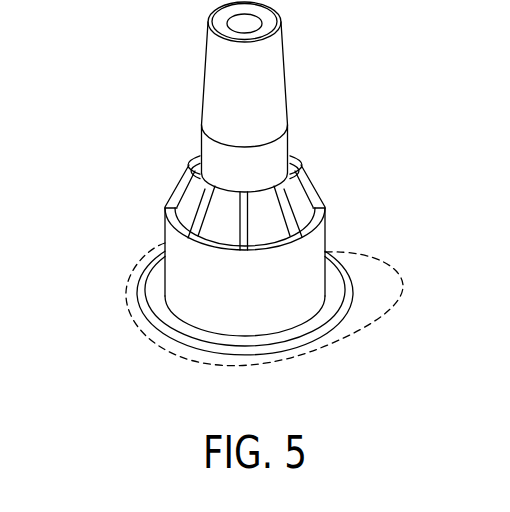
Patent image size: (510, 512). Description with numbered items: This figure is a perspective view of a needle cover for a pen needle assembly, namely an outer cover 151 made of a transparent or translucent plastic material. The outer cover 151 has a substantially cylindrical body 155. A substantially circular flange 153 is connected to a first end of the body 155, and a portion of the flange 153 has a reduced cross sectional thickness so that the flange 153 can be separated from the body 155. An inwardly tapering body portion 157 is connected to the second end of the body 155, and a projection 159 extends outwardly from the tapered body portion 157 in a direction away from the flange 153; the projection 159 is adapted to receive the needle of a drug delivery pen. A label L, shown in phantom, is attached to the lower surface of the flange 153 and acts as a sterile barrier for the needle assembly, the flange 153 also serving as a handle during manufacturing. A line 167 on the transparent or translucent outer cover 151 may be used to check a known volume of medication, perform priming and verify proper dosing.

The outer cover 151 is at (86, 162).
The flange 153 is at (143, 303).
The body 155 is at (310, 246).
The inwardly tapering body portion 157 is at (292, 195).
The projection 159 is at (279, 67).
The line 167 is at (284, 129).
The label L is at (393, 298).